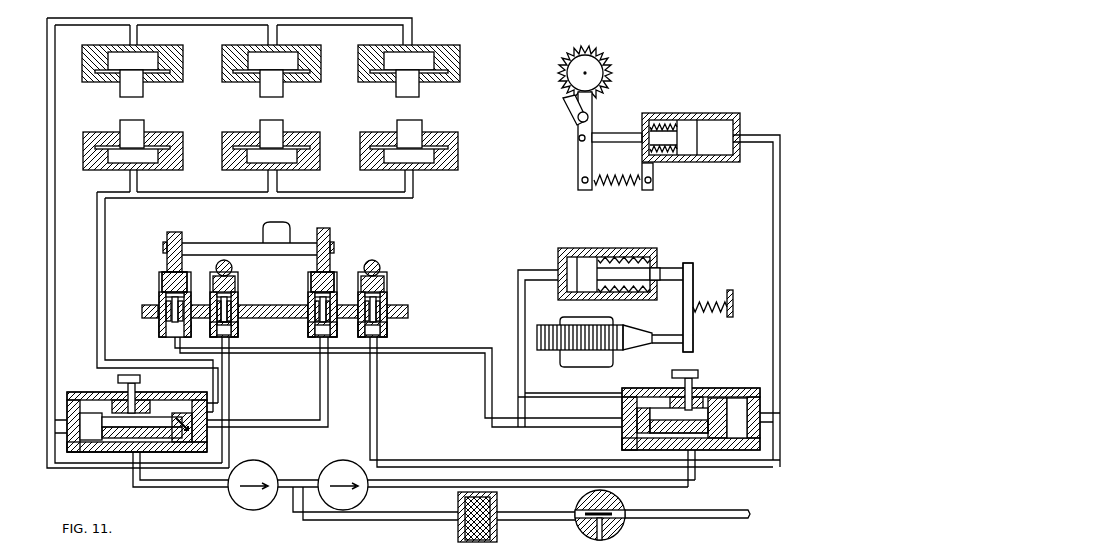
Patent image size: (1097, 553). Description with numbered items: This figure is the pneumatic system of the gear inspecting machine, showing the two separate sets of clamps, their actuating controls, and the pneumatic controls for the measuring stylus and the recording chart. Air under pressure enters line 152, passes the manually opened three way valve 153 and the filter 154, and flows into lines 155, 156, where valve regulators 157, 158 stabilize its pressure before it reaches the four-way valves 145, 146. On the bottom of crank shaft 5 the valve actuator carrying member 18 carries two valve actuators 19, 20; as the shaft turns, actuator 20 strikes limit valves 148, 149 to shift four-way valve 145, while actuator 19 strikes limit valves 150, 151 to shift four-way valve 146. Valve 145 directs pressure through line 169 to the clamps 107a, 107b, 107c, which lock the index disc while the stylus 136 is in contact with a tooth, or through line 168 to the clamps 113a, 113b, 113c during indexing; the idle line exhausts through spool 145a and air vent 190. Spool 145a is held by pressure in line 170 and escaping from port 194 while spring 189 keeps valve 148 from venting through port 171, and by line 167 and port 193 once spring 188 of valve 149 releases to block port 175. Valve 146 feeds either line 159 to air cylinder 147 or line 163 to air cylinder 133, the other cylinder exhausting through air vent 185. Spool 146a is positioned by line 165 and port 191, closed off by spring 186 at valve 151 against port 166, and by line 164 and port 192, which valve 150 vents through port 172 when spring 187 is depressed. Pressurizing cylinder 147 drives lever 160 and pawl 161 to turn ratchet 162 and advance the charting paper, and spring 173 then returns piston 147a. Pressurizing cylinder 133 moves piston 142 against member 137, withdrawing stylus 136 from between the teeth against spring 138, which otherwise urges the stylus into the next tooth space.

The crank shaft 5 is at (280, 222).
The valve actuator carrying member 18 is at (210, 243).
The valve actuator 19 is at (176, 232).
The valve actuator 20 is at (322, 229).
The clamp 107a is at (82, 82).
The clamp 107b is at (222, 82).
The clamp 107c is at (358, 82).
The clamp 113a is at (166, 129).
The clamp 113b is at (300, 129).
The clamp 113c is at (440, 129).
The air cylinder 133 is at (600, 248).
The stylus 136 is at (656, 346).
The member 137 is at (695, 284).
The spring 138 is at (712, 310).
The piston 142 is at (688, 263).
The four-way valve 145 is at (73, 455).
The spool 145a is at (117, 455).
The four-way valve 146 is at (723, 450).
The spool 146a is at (622, 440).
The air cylinder 147 is at (735, 113).
The piston 147a is at (612, 133).
The limit valve 148 is at (232, 265).
The limit valve 149 is at (316, 273).
The limit valve 150 is at (163, 272).
The limit valve 151 is at (380, 265).
The line 152 is at (740, 518).
The three way valve 153 is at (622, 522).
The filter 154 is at (458, 535).
The line 155 is at (390, 487).
The line 156 is at (163, 488).
The valve regulator 157 is at (270, 469).
The valve regulator 158 is at (343, 460).
The line 159 is at (773, 195).
The lever 160 is at (578, 160).
The pawl 161 is at (566, 108).
The ratchet 162 is at (567, 55).
The line 163 is at (518, 320).
The line 164 is at (485, 373).
The line 165 is at (377, 412).
The port 166 is at (387, 290).
The line 167 is at (320, 390).
The line 168 is at (105, 252).
The line 169 is at (55, 230).
The line 170 is at (229, 385).
The port 171 is at (238, 290).
The port 172 is at (159, 290).
The spring 173 is at (660, 125).
The port 175 is at (308, 297).
The air vent 185 is at (700, 372).
The spring 186 is at (387, 327).
The spring 187 is at (158, 333).
The spring 188 is at (308, 335).
The spring 189 is at (238, 327).
The air vent 190 is at (142, 381).
The port 191 is at (727, 420).
The port 192 is at (622, 410).
The port 193 is at (195, 440).
The port 194 is at (67, 418).